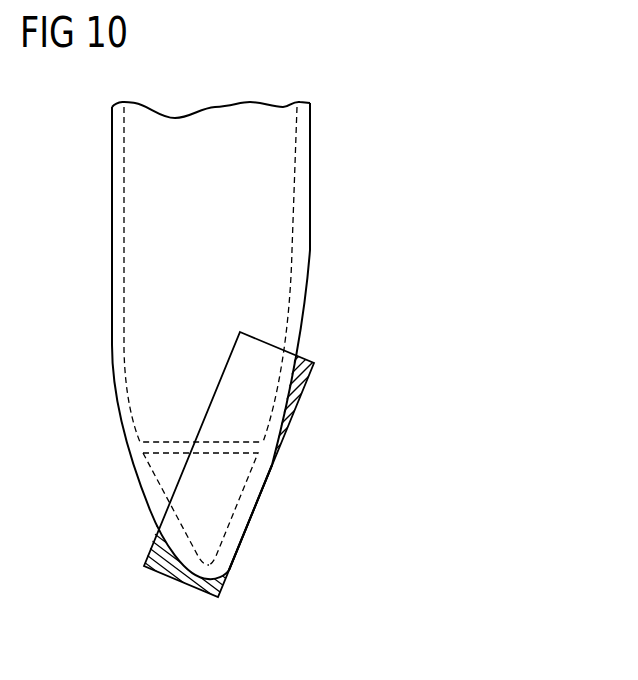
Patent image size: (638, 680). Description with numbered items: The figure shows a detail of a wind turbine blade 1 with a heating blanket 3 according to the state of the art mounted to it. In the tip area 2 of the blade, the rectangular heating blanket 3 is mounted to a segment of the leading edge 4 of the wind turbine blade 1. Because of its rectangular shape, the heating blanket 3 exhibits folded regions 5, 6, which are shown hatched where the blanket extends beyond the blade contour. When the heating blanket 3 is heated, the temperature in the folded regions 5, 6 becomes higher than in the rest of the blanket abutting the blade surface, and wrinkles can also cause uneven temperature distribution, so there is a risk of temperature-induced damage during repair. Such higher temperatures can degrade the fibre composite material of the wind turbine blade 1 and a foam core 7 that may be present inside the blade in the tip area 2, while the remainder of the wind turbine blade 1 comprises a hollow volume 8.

The wind turbine blade 1 is at (214, 130).
The tip area 2 is at (219, 530).
The heating blanket 3 is at (216, 388).
The leading edge 4 is at (257, 510).
The folded region 5 is at (301, 383).
The folded region 6 is at (164, 566).
The foam core 7 is at (163, 482).
The hollow volume 8 is at (150, 287).